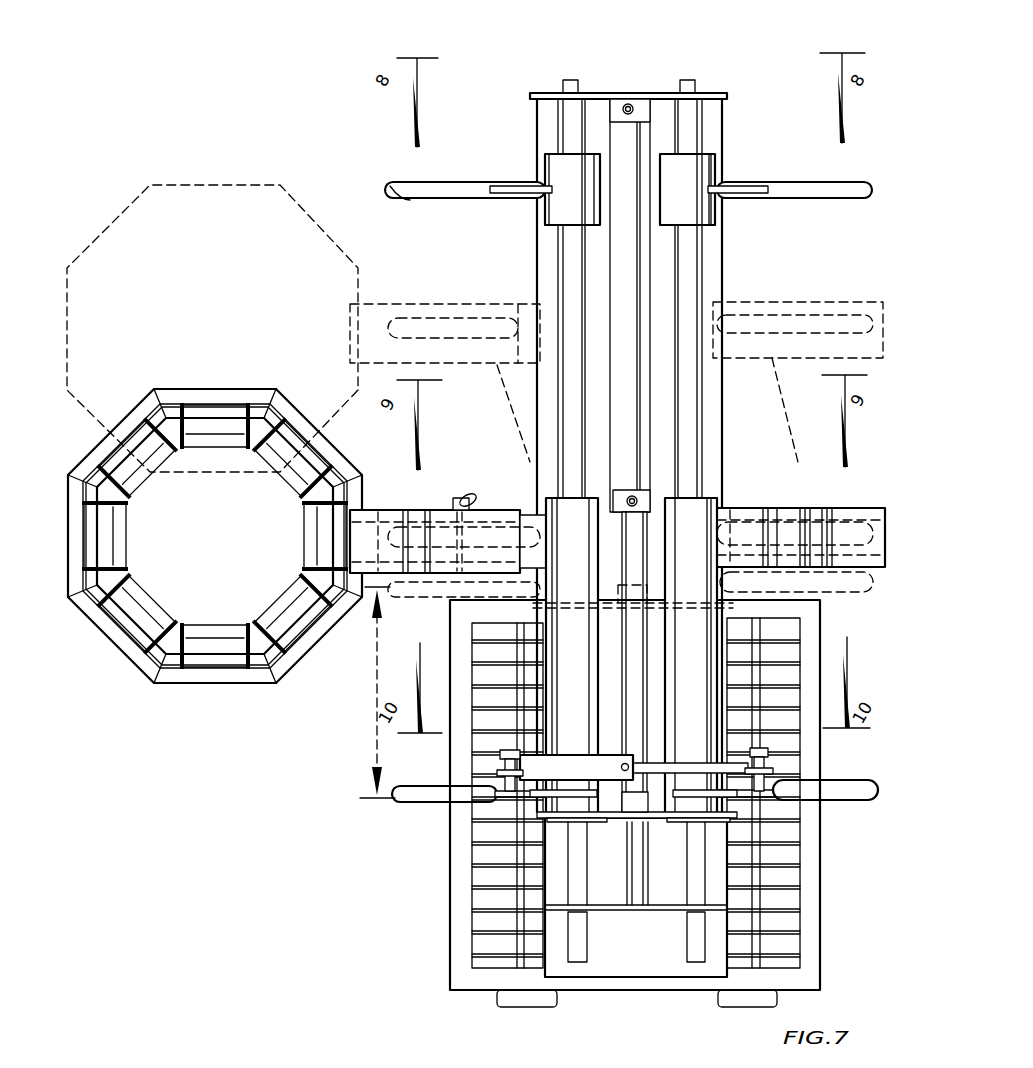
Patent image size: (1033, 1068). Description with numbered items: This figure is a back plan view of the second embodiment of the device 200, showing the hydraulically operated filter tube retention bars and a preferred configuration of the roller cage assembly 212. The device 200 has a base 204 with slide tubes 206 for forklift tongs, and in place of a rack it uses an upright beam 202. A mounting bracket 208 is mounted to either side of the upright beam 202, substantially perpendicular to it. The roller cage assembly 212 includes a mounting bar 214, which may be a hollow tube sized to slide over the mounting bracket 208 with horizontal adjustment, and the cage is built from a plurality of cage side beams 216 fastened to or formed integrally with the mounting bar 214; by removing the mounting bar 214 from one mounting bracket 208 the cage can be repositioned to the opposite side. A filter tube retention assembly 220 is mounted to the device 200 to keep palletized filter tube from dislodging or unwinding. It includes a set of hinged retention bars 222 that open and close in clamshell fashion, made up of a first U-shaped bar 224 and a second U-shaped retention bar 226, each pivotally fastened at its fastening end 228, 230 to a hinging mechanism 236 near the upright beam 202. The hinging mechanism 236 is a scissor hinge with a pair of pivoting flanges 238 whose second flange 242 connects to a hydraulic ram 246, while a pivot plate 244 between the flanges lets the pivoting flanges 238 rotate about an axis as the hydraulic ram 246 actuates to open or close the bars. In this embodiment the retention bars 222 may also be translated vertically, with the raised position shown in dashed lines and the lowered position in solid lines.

The device 200 is at (663, 413).
The upright beam 202 is at (712, 105).
The base 204 is at (458, 884).
The slide tubes 206 is at (718, 1000).
The mounting bracket 208 is at (787, 510).
The roller cage assembly 212 is at (214, 434).
The mounting bar 214 is at (440, 513).
The cage side beams 216 is at (222, 400).
The filter tube retention assembly 220 is at (549, 490).
The hinged retention bars 222 is at (388, 186).
The first U-shaped bar 224 is at (428, 787).
The second U-shaped retention bar 226 is at (870, 198).
The fastening end 228 is at (478, 182).
The fastening end 230 is at (775, 181).
The hinging mechanism 236 is at (688, 730).
The pivoting flanges 238 is at (545, 812).
The second flange 242 is at (527, 797).
The pivot plate 244 is at (556, 96).
The hydraulic ram 246 is at (550, 640).